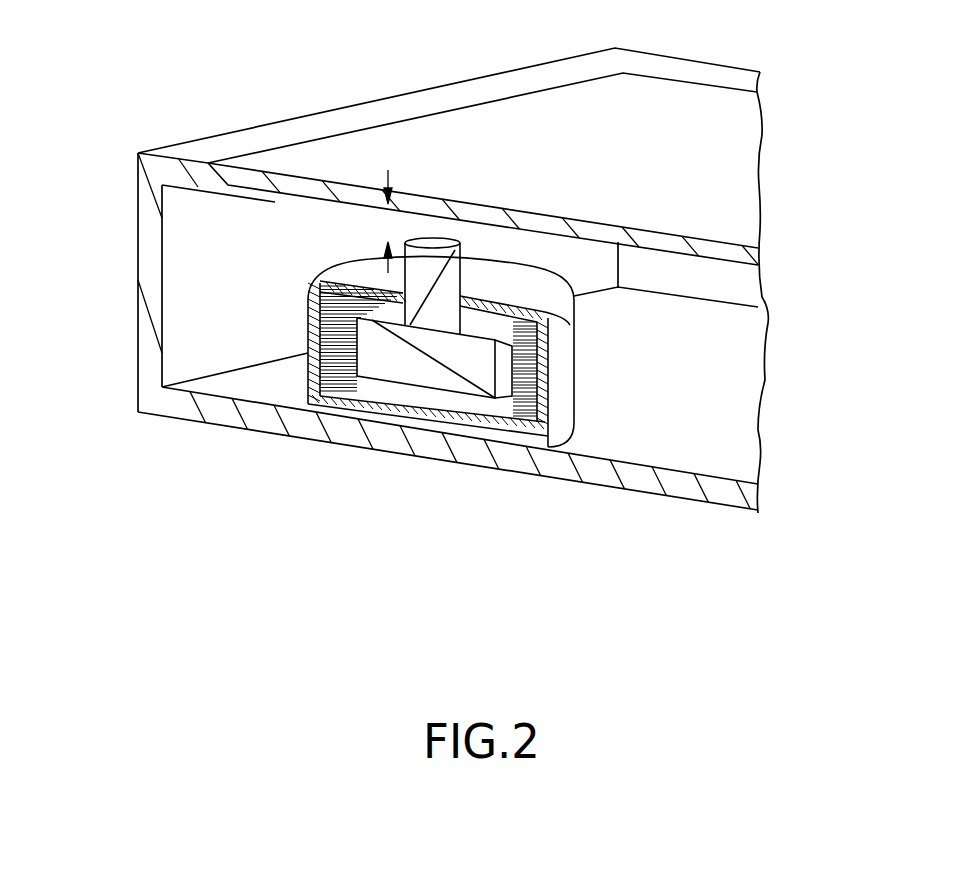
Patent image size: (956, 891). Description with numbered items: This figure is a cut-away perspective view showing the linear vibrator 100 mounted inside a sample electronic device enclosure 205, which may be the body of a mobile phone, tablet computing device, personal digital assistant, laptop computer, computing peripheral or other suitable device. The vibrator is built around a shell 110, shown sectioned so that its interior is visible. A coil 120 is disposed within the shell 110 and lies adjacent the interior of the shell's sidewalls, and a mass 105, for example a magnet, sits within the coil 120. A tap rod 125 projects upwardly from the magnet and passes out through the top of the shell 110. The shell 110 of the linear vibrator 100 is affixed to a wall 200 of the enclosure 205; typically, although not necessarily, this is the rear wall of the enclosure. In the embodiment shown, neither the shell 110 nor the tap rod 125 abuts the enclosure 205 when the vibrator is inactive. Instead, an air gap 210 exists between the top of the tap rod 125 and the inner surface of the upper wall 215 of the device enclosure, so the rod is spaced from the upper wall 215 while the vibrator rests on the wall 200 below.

The linear vibrator 100 is at (368, 354).
The mass 105 is at (438, 377).
The shell 110 is at (563, 365).
The coil 120 is at (528, 420).
The tap rod 125 is at (450, 281).
The wall 200 is at (440, 280).
The electronic device enclosure 205 is at (118, 328).
The air gap 210 is at (385, 226).
The upper wall 215 is at (708, 152).